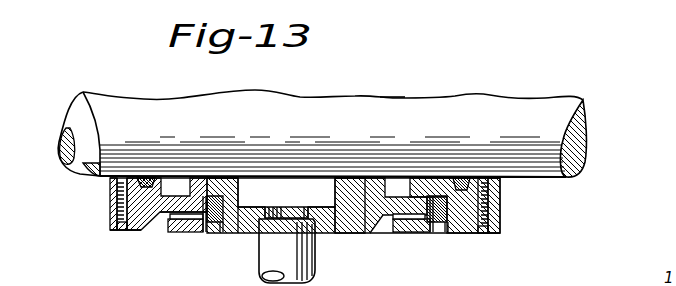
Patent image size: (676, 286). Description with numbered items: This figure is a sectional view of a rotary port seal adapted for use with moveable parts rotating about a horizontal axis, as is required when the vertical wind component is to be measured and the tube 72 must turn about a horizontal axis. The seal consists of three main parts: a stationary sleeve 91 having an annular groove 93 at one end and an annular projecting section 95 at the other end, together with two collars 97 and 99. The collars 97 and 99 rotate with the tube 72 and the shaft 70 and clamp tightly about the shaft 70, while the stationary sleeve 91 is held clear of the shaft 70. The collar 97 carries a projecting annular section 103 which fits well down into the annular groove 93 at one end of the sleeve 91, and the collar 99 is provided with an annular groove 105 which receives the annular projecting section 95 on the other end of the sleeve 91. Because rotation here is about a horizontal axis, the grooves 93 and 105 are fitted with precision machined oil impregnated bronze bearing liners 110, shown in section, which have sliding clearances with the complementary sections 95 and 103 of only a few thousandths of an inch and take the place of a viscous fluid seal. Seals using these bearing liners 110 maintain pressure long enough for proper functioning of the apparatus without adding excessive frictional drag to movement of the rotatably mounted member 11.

The rotatably mounted member 11 is at (391, 97).
The shaft 70 is at (450, 104).
The tube 72 is at (80, 91).
The stationary sleeve 91 is at (358, 235).
The annular groove 93 is at (205, 222).
The annular projecting section 95 is at (393, 209).
The collar 97 is at (137, 224).
The collar 99 is at (500, 218).
The projecting annular section 103 is at (166, 210).
The annular groove 105 is at (434, 221).
The oil impregnated bronze bearing liner 110 is at (216, 218).